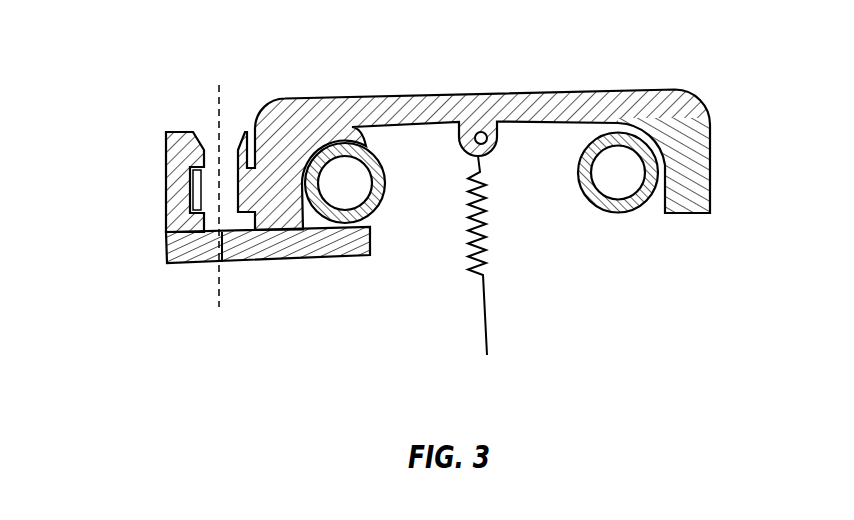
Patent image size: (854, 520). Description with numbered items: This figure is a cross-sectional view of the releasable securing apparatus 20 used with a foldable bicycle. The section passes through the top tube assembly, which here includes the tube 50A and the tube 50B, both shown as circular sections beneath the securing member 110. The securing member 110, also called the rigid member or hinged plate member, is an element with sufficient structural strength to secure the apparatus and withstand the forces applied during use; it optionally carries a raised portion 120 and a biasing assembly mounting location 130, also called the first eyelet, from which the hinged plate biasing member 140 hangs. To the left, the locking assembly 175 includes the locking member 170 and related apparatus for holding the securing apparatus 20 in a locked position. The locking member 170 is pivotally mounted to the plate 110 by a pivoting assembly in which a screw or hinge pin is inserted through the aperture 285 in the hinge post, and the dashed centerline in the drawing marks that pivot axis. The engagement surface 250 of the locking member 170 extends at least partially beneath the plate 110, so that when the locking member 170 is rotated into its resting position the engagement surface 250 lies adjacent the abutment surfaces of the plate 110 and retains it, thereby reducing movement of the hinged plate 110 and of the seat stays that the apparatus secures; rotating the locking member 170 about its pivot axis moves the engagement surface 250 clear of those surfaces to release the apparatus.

The releasable securing apparatus 20 is at (239, 72).
The aperture 285 is at (203, 130).
The locking member 170 is at (163, 172).
The locking assembly 175 is at (153, 280).
The engagement surface 250 is at (306, 258).
The tube 50A is at (345, 143).
The securing member 110 is at (427, 82).
The biasing assembly mounting location 130 is at (481, 132).
The tube 50B is at (618, 133).
The raised portion 120 is at (694, 93).
The hinged plate biasing member 140 is at (480, 235).